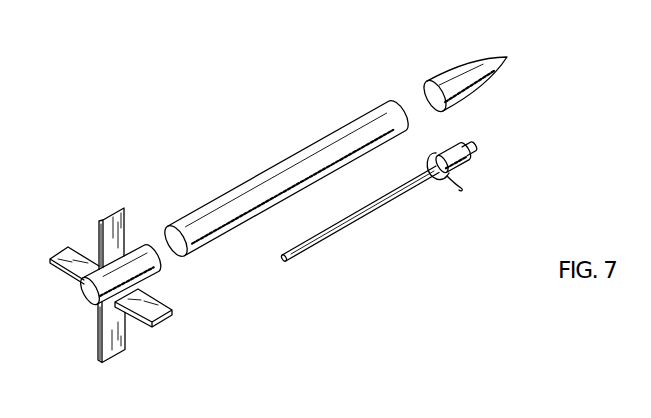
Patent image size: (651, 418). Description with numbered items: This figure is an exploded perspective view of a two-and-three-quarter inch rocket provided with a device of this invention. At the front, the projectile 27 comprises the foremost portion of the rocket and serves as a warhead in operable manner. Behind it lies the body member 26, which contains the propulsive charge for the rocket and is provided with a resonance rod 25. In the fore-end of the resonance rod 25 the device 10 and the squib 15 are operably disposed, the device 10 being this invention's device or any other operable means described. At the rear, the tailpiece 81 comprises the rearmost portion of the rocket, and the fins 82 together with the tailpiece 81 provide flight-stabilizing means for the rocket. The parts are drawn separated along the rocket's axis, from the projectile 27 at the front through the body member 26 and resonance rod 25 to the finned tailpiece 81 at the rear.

The projectile 27 is at (472, 73).
The body member 26 is at (255, 190).
The resonance rod 25 is at (367, 214).
The device 10 is at (462, 161).
The squib 15 is at (472, 147).
The tailpiece 81 is at (153, 268).
The fins 82 is at (67, 250).